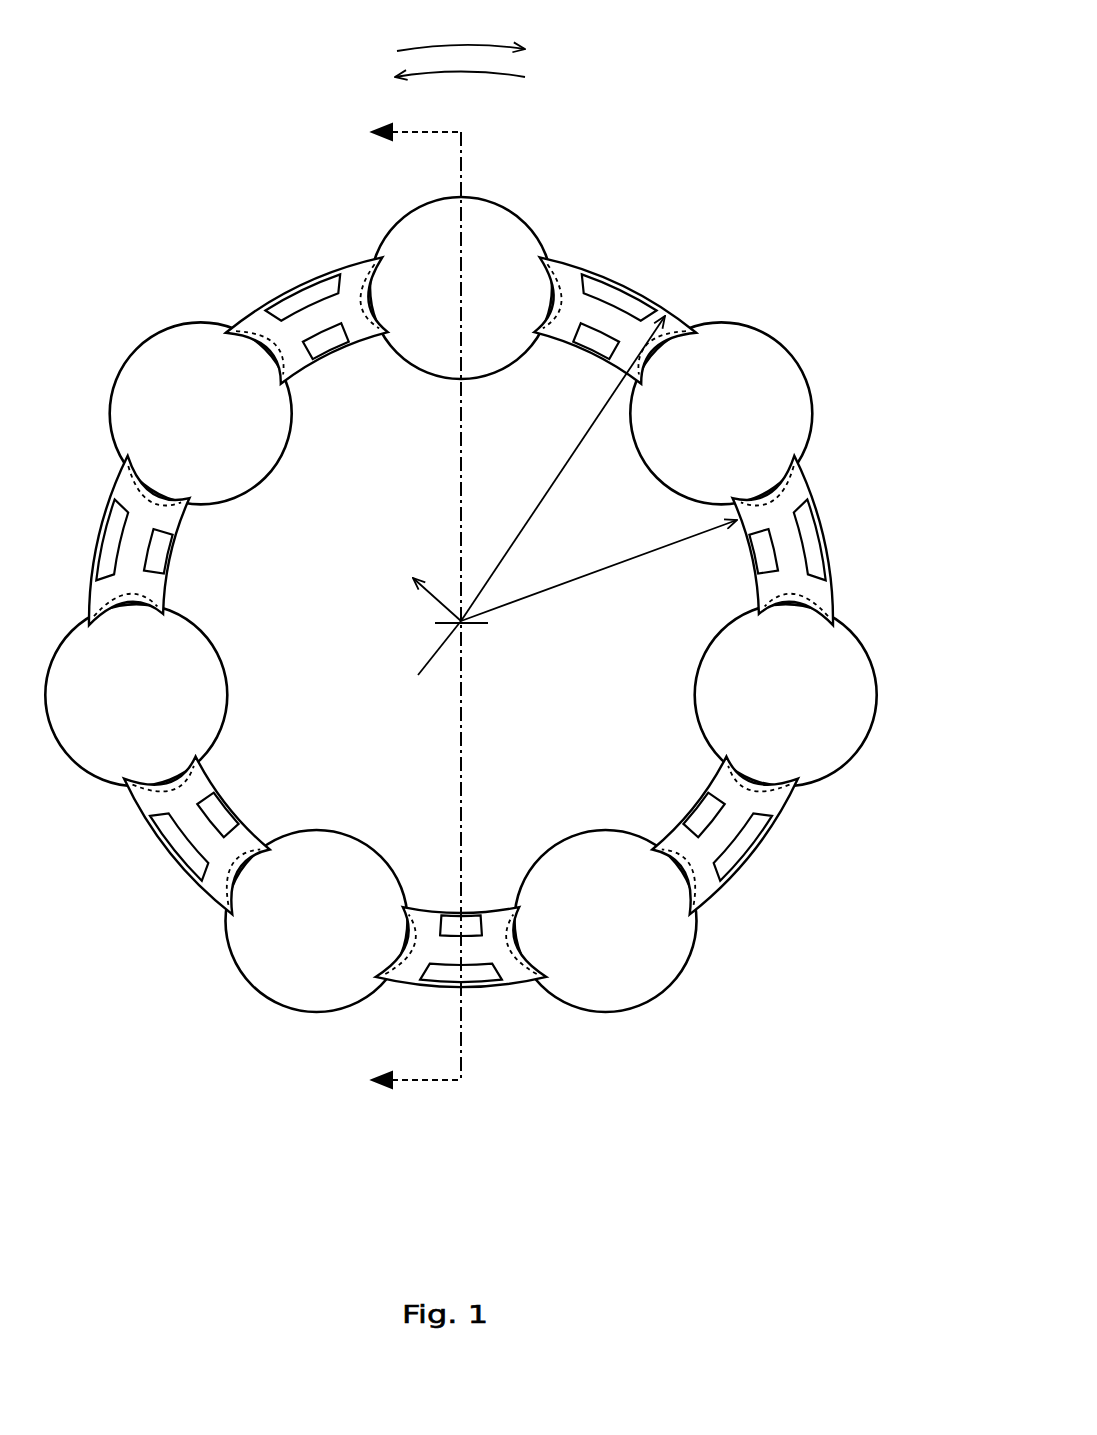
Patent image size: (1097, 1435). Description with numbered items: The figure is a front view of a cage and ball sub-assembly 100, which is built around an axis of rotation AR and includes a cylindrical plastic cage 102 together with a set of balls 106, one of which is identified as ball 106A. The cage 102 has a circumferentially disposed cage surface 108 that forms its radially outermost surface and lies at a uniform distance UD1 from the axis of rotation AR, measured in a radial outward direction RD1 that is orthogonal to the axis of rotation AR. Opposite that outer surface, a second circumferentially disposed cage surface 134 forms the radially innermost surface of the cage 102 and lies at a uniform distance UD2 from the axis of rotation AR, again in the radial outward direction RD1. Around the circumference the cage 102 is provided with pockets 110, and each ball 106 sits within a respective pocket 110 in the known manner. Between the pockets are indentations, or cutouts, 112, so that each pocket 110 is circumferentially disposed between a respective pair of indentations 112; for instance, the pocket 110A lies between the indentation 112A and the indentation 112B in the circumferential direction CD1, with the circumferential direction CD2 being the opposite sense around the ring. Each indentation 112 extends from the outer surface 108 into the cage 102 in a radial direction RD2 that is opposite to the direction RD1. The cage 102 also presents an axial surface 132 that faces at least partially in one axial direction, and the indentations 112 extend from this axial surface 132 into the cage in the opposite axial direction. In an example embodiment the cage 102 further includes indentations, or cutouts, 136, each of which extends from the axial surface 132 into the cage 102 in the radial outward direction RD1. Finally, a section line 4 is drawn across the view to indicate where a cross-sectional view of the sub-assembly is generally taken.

The cage and ball sub-assembly 100 is at (501, 555).
The cylindrical plastic cage 102 is at (501, 628).
The balls 106 is at (495, 370).
The ball 106A is at (810, 737).
The circumferentially disposed cage surface 108 is at (307, 274).
The pockets 110 is at (842, 589).
The pocket 110A is at (681, 301).
The indentations 112 is at (172, 840).
The indentation 112A is at (629, 278).
The indentation 112B is at (846, 540).
The axial surface 132 is at (483, 999).
The circumferentially disposed cage surface 134 is at (679, 810).
The indentations 136 is at (666, 772).
The line 4- 4 is at (404, 613).
The circumferential direction CD1 is at (470, 45).
The circumferential direction CD2 is at (500, 77).
The uniform distance UD1 is at (573, 440).
The uniform distance UD2 is at (650, 537).
The radial outward direction RD1 is at (442, 600).
The radial direction RD2 is at (440, 645).
The axis of rotation AR is at (472, 625).